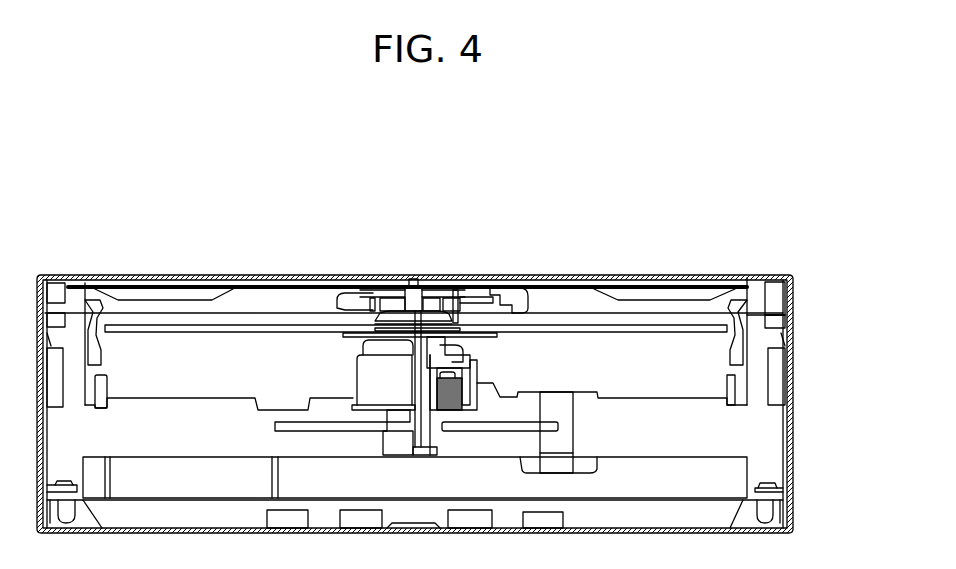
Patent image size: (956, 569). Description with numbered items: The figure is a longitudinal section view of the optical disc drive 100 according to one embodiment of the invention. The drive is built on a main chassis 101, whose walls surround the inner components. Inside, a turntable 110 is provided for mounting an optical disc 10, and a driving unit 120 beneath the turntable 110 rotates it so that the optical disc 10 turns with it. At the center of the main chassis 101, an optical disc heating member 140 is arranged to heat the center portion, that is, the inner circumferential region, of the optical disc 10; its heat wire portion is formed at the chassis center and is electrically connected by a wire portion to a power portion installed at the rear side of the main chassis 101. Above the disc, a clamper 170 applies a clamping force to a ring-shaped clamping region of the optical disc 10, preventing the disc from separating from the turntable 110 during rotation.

The optical disc drive 100 is at (135, 238).
The main chassis 101 is at (794, 300).
The optical disc 10 is at (663, 330).
The turntable 110 is at (475, 352).
The driving unit 120 is at (347, 352).
The optical disc heating member 140 is at (406, 281).
The clamper 170 is at (520, 312).